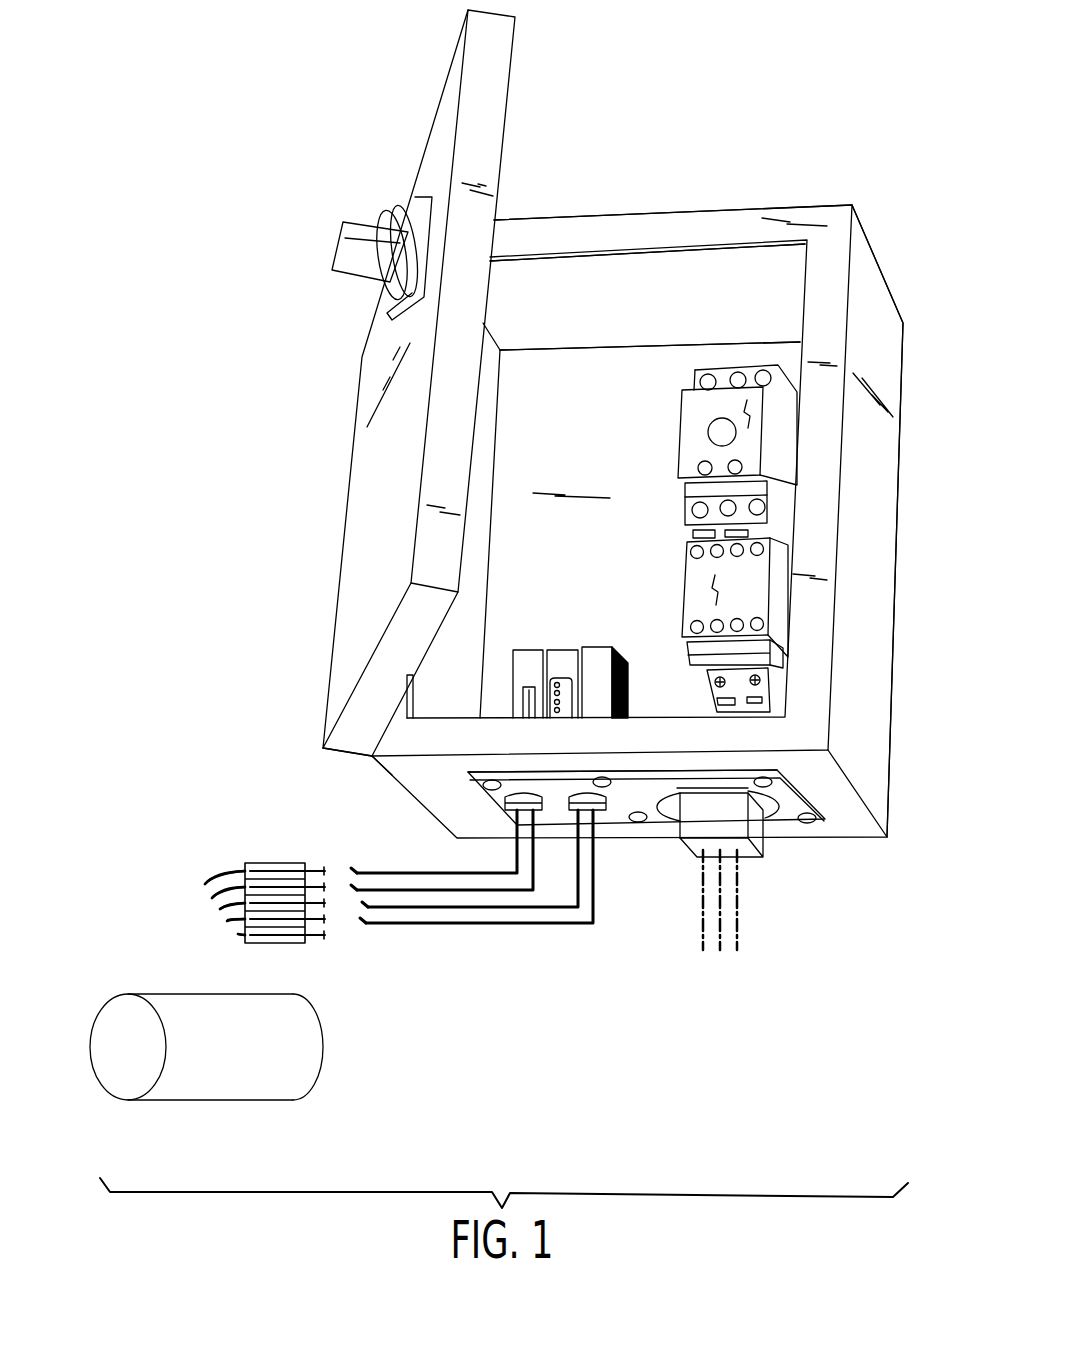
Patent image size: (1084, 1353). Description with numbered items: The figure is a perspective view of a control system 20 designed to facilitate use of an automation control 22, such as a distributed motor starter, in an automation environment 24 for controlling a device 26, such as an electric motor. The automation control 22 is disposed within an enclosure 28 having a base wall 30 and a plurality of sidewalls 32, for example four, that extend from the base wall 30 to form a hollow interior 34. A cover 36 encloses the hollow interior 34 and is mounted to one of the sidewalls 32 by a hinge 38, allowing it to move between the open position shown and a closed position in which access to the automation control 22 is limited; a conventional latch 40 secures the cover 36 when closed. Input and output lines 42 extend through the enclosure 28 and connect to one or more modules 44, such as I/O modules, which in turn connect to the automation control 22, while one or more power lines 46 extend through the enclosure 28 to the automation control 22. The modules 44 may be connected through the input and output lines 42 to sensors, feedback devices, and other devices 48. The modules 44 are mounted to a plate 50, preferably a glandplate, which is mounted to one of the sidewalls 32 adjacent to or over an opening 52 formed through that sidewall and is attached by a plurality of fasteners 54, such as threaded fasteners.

The system 20 is at (335, 94).
The automation control 22 is at (693, 427).
The automation environment 24 is at (228, 816).
The device 26 is at (183, 1007).
The enclosure 28 is at (877, 256).
The base wall 30 is at (573, 377).
The sidewalls 32 is at (810, 203).
The hollow interior 34 is at (637, 296).
The cover 36 is at (487, 118).
The hinge 38 is at (363, 753).
The latch 40 is at (357, 230).
The input and output lines 42 is at (392, 883).
The modules 44 is at (600, 658).
The power lines 46 is at (738, 910).
The sensors, feedback devices, and other devices 48 is at (245, 871).
The plate 50 is at (615, 817).
The opening 52 is at (655, 781).
The fasteners 54 is at (483, 780).